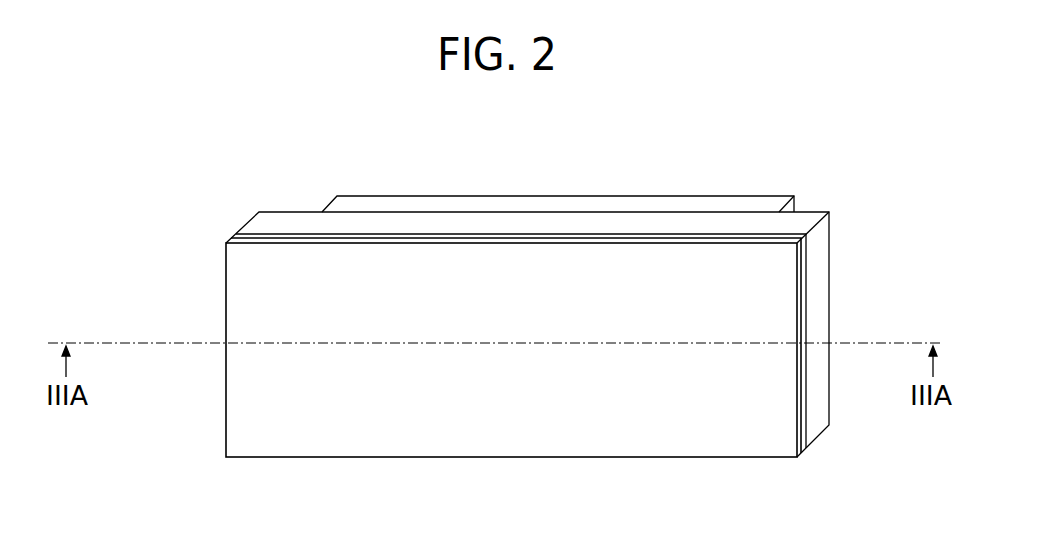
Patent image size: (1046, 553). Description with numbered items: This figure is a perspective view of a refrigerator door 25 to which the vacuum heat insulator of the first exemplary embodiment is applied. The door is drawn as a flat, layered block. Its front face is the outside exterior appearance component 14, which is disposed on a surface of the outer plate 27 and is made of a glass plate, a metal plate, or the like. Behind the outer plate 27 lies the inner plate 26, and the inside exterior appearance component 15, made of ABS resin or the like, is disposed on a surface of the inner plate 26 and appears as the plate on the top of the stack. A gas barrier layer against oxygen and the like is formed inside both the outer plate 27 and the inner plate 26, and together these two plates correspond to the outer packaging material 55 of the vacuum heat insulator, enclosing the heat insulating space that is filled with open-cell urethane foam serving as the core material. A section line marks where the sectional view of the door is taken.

The refrigerator door 25 is at (294, 184).
The inside exterior appearance component 15 is at (618, 203).
The outside exterior appearance component 14 is at (768, 449).
The outer packaging material 55 is at (893, 235).
The outer plate 27 is at (805, 268).
The inner plate 26 is at (820, 313).